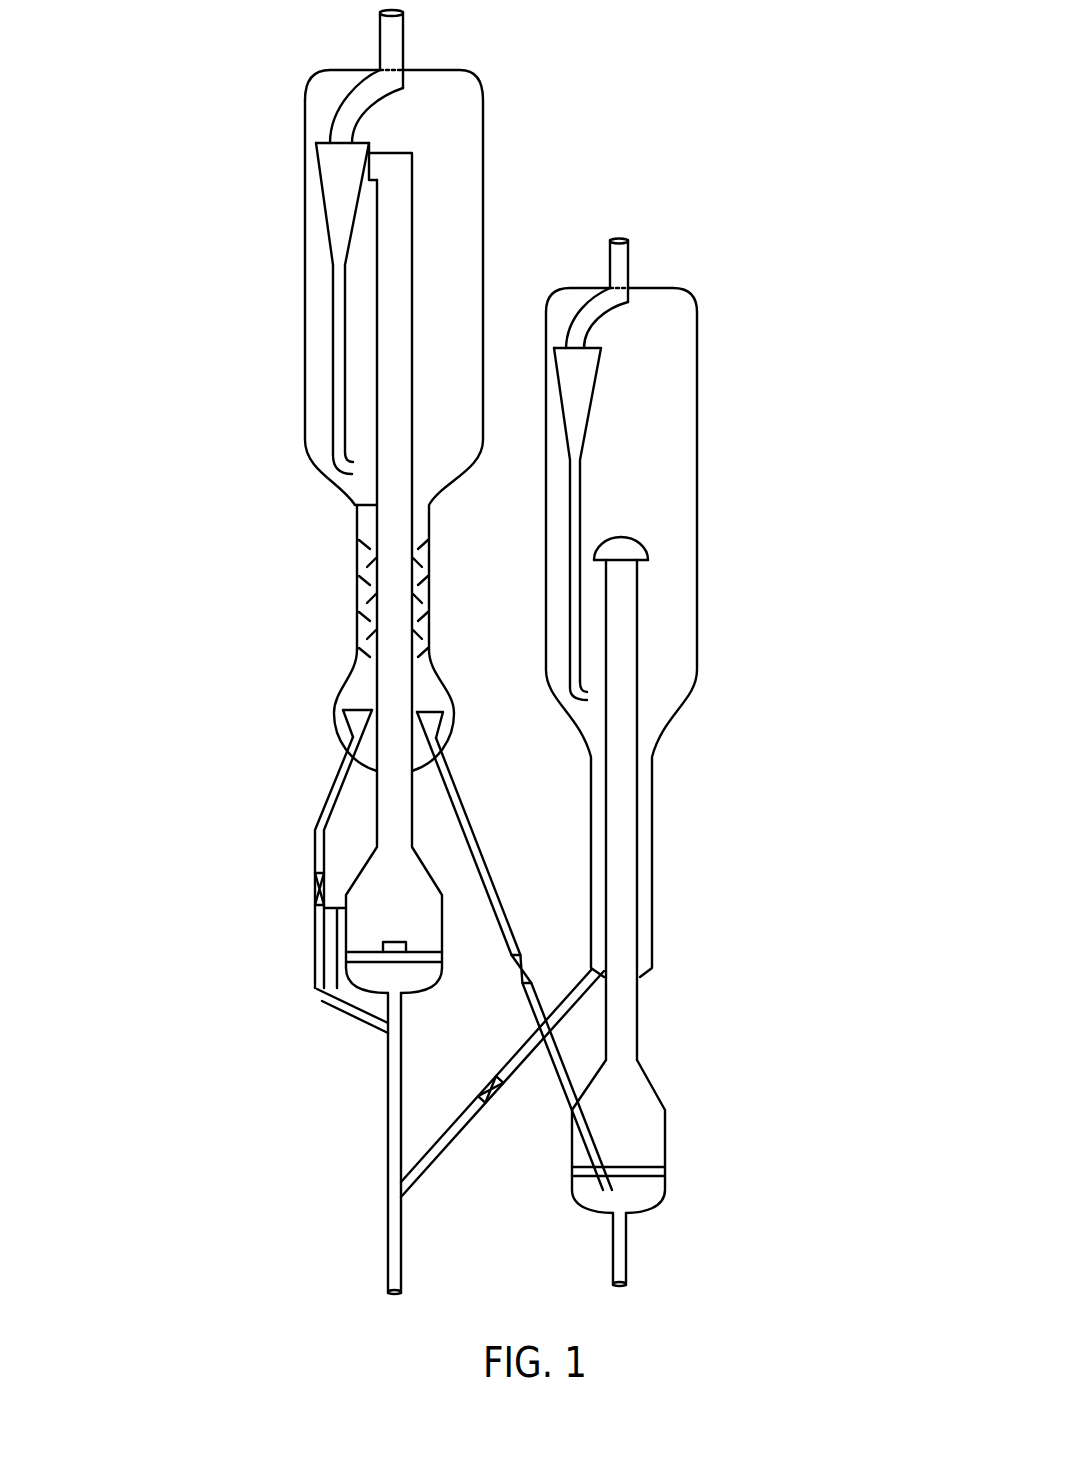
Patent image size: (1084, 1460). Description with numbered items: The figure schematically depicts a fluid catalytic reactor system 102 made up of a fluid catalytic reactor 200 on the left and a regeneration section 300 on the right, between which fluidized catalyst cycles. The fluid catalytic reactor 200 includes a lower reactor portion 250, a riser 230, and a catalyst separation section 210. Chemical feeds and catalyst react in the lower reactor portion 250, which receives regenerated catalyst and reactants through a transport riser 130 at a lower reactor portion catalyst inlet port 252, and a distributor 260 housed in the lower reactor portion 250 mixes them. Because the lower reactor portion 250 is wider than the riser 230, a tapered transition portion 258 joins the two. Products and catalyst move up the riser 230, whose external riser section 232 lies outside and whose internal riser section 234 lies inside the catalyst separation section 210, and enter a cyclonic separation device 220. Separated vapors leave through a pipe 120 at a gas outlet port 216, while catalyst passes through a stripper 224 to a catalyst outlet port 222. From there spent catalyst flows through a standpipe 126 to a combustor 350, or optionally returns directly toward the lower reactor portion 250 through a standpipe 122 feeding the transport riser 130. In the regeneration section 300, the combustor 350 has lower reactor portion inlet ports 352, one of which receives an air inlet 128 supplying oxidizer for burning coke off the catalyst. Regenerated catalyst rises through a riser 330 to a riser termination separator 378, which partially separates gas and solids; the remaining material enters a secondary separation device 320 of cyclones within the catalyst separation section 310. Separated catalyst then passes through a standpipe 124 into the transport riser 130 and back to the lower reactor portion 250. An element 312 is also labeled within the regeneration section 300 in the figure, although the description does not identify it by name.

The fluid catalytic reactor system 102 is at (712, 86).
The pipe 120 is at (403, 48).
The standpipe 122 is at (314, 948).
The standpipe 124 is at (466, 1132).
The standpipe 126 is at (507, 918).
The air inlet 128 is at (627, 1258).
The transport riser 130 is at (402, 1030).
The fluid catalytic reactor 200 is at (225, 244).
The catalyst separation section 210 is at (305, 350).
The gas outlet port 216 is at (387, 70).
The separation device 220 is at (318, 160).
The catalyst outlet port 222 is at (441, 762).
The stripper 224 is at (362, 578).
The riser 230 is at (376, 793).
The external riser section 232 is at (414, 798).
The internal riser section 234 is at (358, 508).
The lower reactor portion 250 is at (343, 908).
The lower reactor portion catalyst inlet port 252 is at (384, 1026).
The transition portion 258 is at (358, 868).
The distributor 260 is at (377, 976).
The regeneration section 300 is at (778, 503).
The catalyst separation section 310 is at (699, 377).
The riser 312 is at (653, 928).
The secondary separation device 320 is at (566, 440).
The riser 330 is at (638, 1026).
The combustor 350 is at (667, 1125).
The lower reactor portion inlet port 352 is at (617, 1218).
The riser termination separator 378 is at (622, 562).